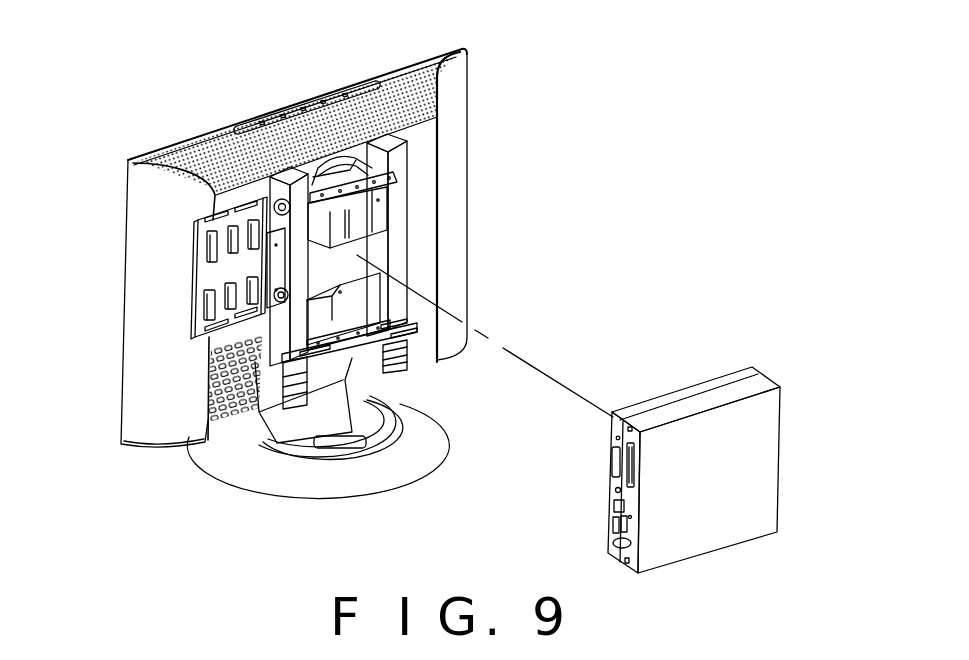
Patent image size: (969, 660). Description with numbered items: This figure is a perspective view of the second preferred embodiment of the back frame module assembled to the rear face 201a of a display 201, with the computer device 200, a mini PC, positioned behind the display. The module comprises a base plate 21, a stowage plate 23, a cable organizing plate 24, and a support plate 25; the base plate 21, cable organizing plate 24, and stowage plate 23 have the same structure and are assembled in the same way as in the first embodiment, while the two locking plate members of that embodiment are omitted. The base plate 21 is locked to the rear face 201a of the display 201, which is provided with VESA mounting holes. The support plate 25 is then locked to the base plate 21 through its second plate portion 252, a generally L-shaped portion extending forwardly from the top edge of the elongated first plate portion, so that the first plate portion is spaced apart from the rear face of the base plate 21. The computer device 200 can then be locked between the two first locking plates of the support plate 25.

The computer device 200 is at (768, 472).
The display 201 is at (365, 88).
The rear face 201a is at (425, 158).
The base plate 21 is at (264, 198).
The stowage plate 23 is at (397, 374).
The cable organizing plate 24 is at (186, 285).
The support plate 25 is at (415, 232).
The second plate portion 252 is at (332, 160).